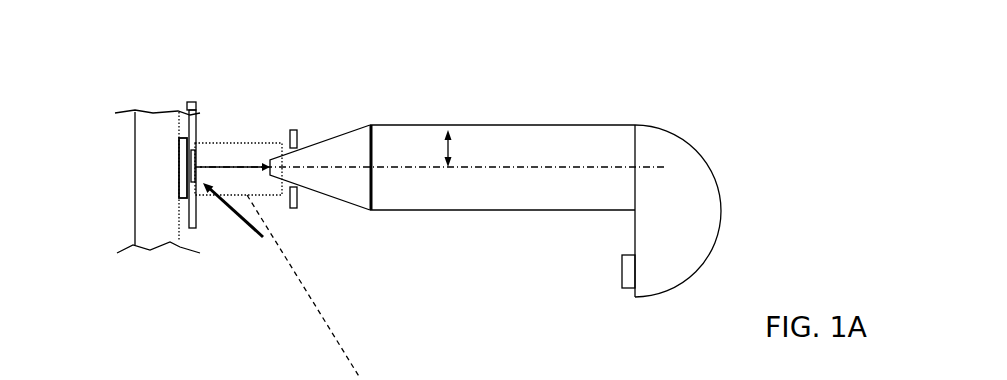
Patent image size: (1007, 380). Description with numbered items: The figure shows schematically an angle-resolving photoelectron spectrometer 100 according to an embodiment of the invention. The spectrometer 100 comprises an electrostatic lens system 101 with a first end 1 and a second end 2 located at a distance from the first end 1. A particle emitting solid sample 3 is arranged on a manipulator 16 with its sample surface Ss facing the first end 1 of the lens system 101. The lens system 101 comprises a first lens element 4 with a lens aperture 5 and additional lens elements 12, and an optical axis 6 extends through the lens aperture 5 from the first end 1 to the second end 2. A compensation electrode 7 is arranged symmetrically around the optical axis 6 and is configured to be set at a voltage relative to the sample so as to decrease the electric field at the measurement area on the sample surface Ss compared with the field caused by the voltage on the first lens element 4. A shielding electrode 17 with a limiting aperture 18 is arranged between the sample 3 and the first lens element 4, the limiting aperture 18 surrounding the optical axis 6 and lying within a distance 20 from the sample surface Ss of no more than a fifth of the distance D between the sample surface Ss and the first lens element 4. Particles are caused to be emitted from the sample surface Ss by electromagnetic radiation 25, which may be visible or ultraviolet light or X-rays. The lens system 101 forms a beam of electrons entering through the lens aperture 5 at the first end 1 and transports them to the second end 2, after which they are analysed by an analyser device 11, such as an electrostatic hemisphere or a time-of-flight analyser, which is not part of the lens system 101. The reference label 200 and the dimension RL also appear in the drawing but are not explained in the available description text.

The first end 1 is at (281, 129).
The second end 2 is at (632, 95).
The particle emitting solid sample 3 is at (180, 153).
The first lens element 4 is at (350, 188).
The lens aperture 5 is at (258, 170).
The optical axis 6 is at (483, 168).
The compensation electrode 7 is at (297, 132).
The analyser device 11 is at (625, 272).
The additional lens elements 12 is at (501, 125).
The manipulator 16 is at (150, 123).
The shielding electrode 17 is at (180, 205).
The limiting aperture 18 is at (180, 170).
The distance 20 is at (188, 102).
The electromagnetic radiation 25 is at (230, 207).
The angle-resolving photoelectron spectrometer 100 is at (211, 300).
The electrostatic lens system 101 is at (455, 276).
The light device 200 is at (686, 83).
The distance between the sample surface and the first lens element D is at (229, 162).
The sample surface Ss is at (189, 115).
The tube radius RL is at (450, 147).